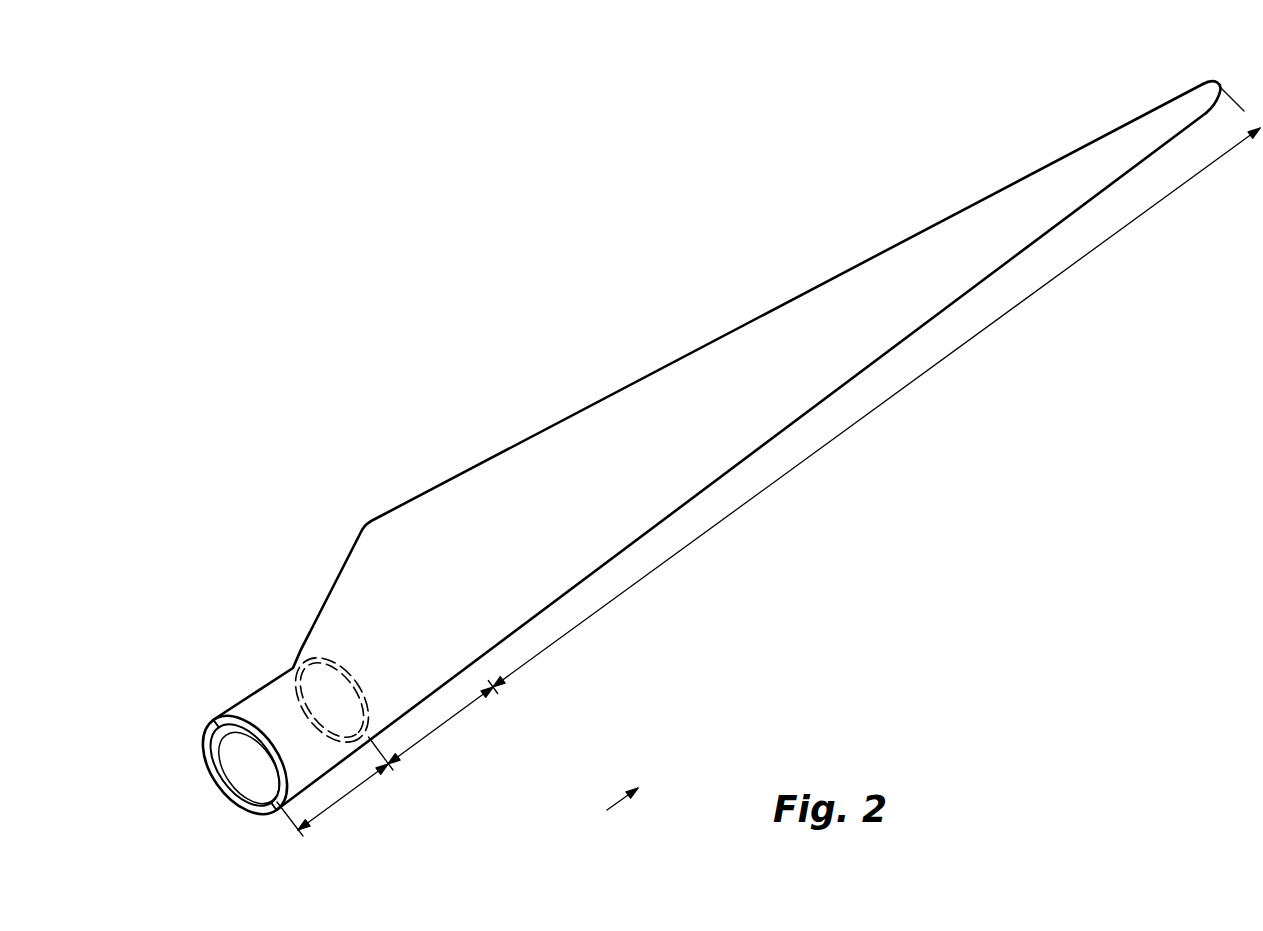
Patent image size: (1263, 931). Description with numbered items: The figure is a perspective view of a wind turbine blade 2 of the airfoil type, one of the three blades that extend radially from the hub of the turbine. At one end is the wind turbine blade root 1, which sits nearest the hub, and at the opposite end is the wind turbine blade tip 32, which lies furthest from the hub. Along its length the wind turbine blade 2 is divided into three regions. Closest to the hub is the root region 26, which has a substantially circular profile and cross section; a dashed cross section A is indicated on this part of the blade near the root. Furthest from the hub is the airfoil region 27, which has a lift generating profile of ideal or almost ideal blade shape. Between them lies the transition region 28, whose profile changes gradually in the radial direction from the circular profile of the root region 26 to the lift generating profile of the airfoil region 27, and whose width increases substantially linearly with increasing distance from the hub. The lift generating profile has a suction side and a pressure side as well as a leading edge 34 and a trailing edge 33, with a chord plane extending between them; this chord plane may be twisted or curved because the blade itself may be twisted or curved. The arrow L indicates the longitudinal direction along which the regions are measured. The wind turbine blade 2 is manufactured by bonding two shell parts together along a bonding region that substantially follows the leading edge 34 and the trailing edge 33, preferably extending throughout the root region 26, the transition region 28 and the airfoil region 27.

The wind turbine blade root 1 is at (256, 704).
The wind turbine blade 2 is at (716, 436).
The cross-section region A is at (292, 676).
The root region 26 is at (340, 798).
The airfoil region 27 is at (802, 465).
The transition region 28 is at (440, 728).
The wind turbine blade tip 32 is at (1185, 107).
The trailing edge 33 is at (716, 338).
The leading edge 34 is at (713, 482).
The longitudinal direction L is at (632, 786).